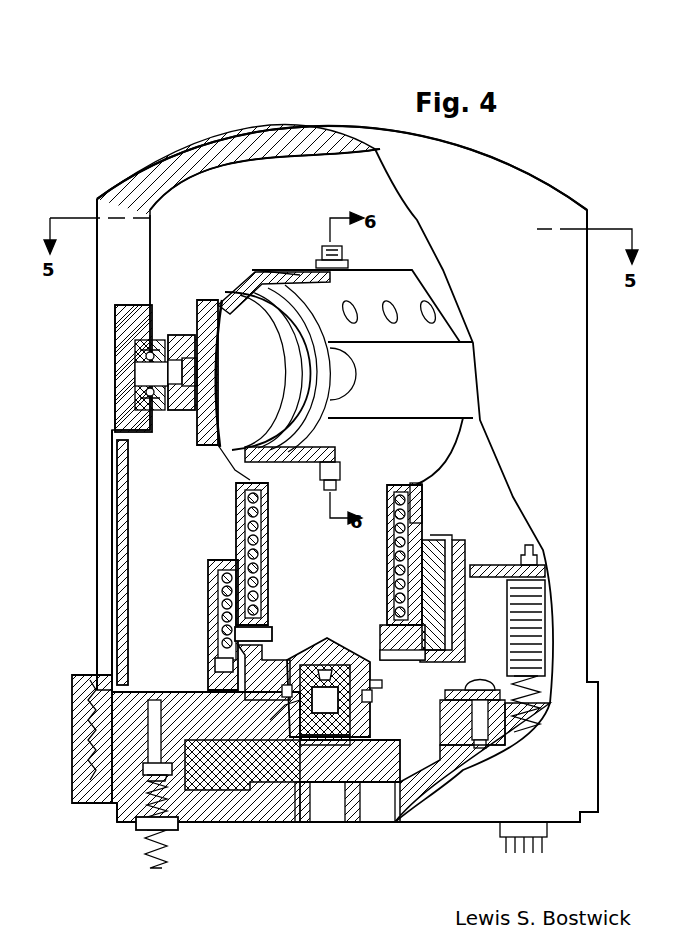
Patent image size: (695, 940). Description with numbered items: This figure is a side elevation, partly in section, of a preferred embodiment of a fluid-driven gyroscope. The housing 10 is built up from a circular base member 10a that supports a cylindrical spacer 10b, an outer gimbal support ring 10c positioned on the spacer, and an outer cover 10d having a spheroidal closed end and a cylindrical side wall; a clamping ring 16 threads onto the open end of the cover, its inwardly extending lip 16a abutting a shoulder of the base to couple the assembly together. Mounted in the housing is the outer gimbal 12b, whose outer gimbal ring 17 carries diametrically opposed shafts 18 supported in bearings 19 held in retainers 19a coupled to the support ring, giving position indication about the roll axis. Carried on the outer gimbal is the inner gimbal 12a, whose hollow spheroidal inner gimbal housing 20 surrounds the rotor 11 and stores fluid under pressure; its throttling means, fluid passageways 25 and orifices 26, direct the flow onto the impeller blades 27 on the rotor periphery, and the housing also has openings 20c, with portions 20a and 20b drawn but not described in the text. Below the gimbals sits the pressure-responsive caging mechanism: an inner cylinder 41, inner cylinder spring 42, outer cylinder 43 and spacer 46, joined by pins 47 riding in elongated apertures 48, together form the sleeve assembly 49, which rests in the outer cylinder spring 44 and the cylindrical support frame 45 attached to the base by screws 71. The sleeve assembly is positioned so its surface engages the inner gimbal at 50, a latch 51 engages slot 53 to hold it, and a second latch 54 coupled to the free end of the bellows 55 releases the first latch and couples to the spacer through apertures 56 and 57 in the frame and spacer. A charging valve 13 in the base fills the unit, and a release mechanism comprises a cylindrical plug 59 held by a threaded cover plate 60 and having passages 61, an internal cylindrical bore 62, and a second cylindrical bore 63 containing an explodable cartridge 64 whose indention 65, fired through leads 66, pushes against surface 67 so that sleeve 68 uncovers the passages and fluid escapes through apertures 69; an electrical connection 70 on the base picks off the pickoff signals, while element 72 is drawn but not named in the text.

The housing 10 is at (530, 368).
The circular base member 10a is at (142, 736).
The cylindrical spacer 10b is at (128, 522).
The outer gimbal support ring 10c is at (145, 432).
The outer cover 10d is at (100, 396).
The rotor 11 is at (255, 383).
The inner gimbal 12a is at (343, 291).
The outer gimbal 12b is at (433, 376).
The charging valve 13 is at (196, 870).
The clamping ring 16 is at (95, 790).
The inwardly extending lip 16a is at (108, 805).
The outer gimbal ring 17 is at (185, 412).
The shafts 18 is at (178, 360).
The bearings 19 is at (152, 345).
The retainers 19a is at (148, 355).
The inner gimbal housing 20 is at (258, 447).
The frame top band 20a is at (258, 272).
The frame arm 20b is at (238, 470).
The opening 20c is at (300, 470).
The fluid passageways 25 is at (425, 305).
The orifices 26 is at (228, 300).
The impeller blades 27 is at (292, 335).
The inner cylinder 41 is at (385, 525).
The inner cylinder spring 42 is at (392, 568).
The outer cylinder 43 is at (424, 495).
The outer cylinder spring 44 is at (222, 600).
The cylindrical support frame 45 is at (208, 566).
The spacer 46 is at (400, 650).
The pins 47 is at (272, 636).
The elongated apertures 48 is at (262, 614).
The sleeve assembly 49 is at (314, 573).
The engagement surface 50 is at (405, 492).
The latch 51 is at (462, 540).
The slot 53 is at (428, 542).
The second latch 54 is at (482, 565).
The pressure responsive bellows 55 is at (545, 615).
The aperture 56 is at (470, 752).
The aperture 57 is at (215, 665).
The cylindrical plug 59 is at (350, 656).
The threaded cover plate 60 is at (225, 812).
The passages 61 is at (282, 690).
The internal cylindrical bore 62 is at (286, 712).
The second cylindrical bore 63 is at (290, 670).
The explodable cartridge 64 is at (384, 690).
The indention 65 is at (330, 675).
The leads 66 is at (336, 740).
The surface 67 is at (322, 668).
The sleeve 68 is at (305, 738).
The apertures 69 is at (280, 822).
The electrical connection 70 is at (547, 830).
The screws 71 is at (478, 680).
The adjusting screw 72 is at (160, 866).